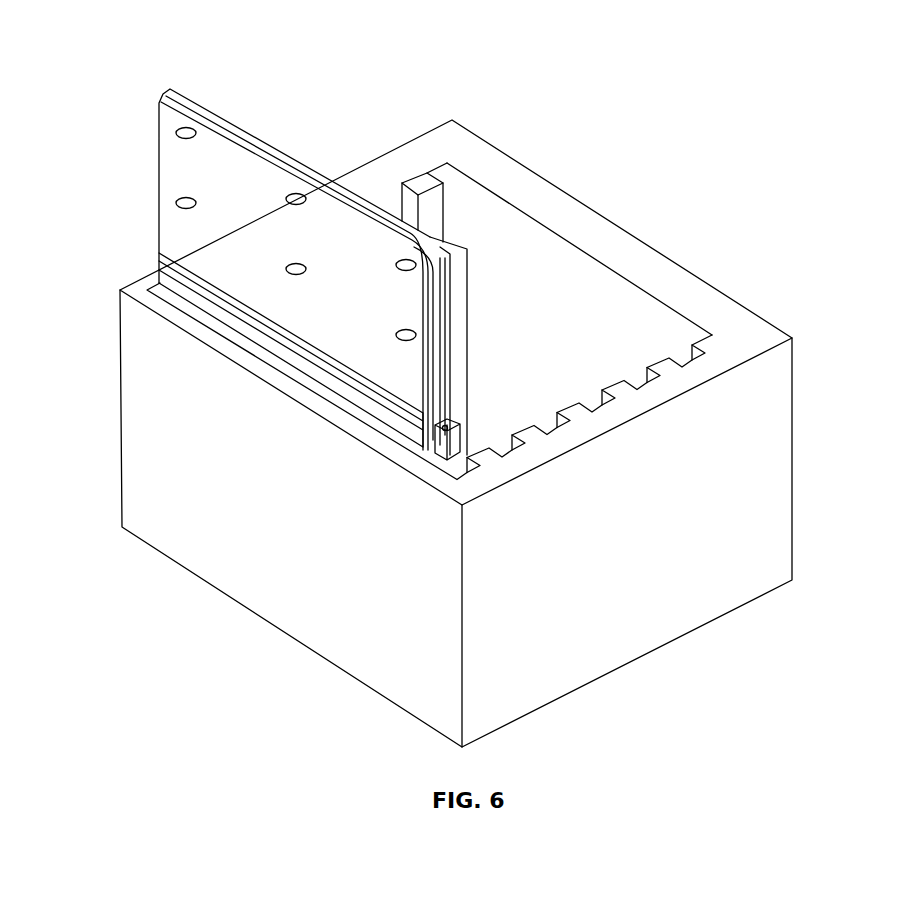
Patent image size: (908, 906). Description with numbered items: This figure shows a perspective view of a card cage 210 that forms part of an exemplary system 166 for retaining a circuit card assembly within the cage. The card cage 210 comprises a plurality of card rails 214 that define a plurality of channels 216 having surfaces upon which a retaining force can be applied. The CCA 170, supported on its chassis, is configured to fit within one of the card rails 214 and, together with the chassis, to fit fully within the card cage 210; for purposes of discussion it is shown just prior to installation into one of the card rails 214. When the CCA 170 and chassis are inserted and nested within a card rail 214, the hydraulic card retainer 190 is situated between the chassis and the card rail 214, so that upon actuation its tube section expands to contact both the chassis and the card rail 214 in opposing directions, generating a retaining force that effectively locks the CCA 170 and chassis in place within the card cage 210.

The system 166 is at (357, 105).
The circuit card assembly (CCA) 170 is at (143, 187).
The hydraulic card retainer 190 is at (448, 334).
The card cage 210 is at (674, 204).
The card rails 214 is at (621, 388).
The channels 216 is at (597, 403).